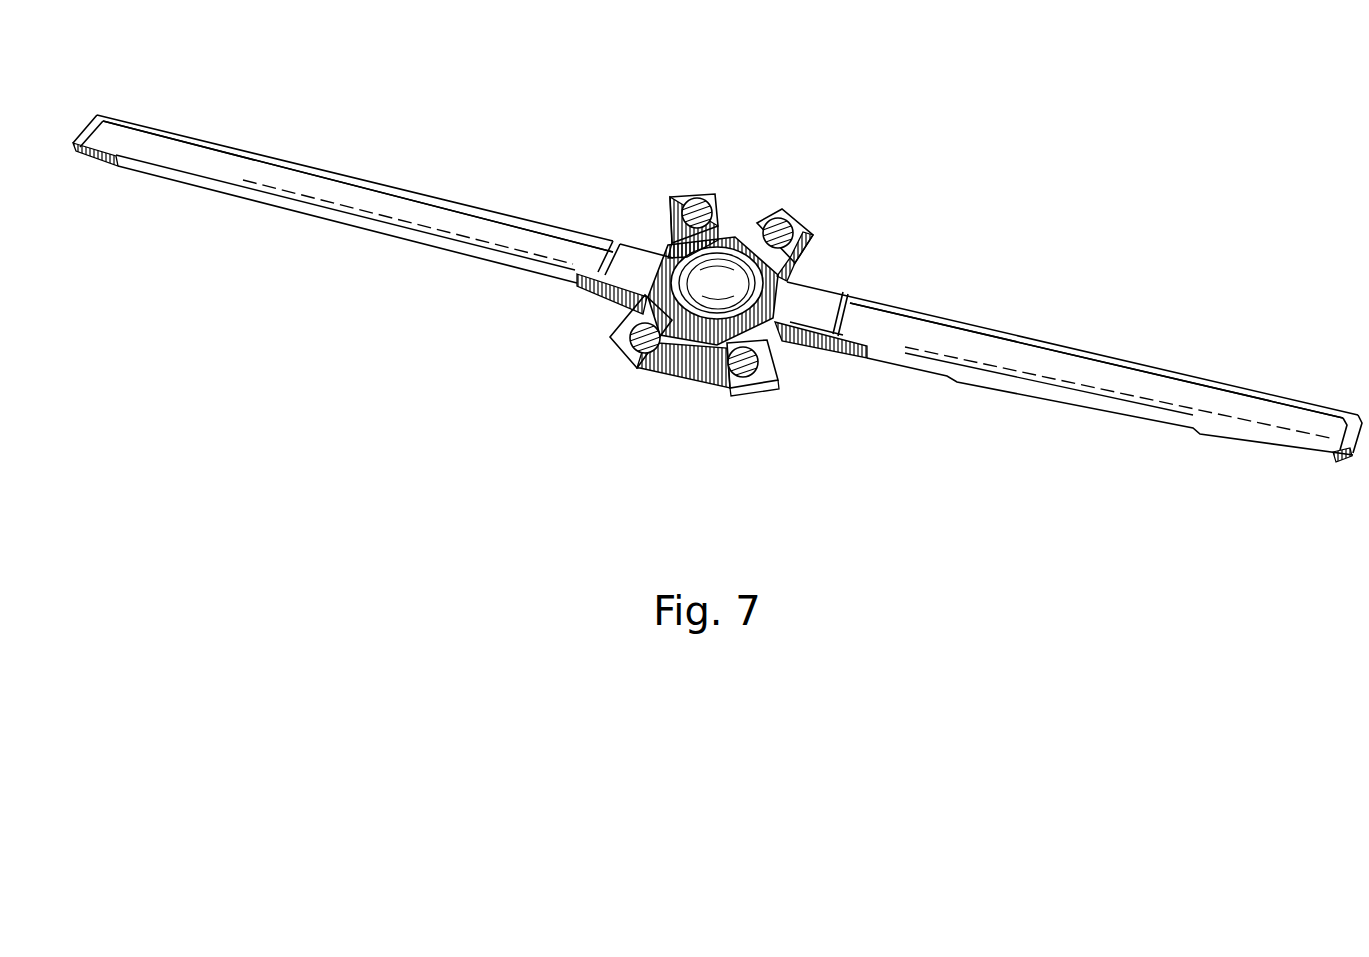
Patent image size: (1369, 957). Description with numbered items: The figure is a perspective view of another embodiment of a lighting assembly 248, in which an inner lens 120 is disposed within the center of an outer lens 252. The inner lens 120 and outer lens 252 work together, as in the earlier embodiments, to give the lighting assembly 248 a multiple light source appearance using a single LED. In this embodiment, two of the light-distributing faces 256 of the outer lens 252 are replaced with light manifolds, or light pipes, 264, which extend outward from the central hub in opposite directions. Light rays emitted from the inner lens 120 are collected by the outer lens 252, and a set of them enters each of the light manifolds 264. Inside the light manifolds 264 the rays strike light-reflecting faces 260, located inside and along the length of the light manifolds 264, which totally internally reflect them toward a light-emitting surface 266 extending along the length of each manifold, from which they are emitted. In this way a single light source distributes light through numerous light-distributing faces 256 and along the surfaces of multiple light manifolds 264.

The lighting assembly 248 is at (809, 263).
The inner lens 120 is at (737, 267).
The outer lens 252 is at (808, 302).
The light-distributing faces 256 is at (703, 200).
The light-reflecting faces 260 is at (90, 155).
The light manifolds 264 is at (691, 245).
The light-emitting surface 266 is at (270, 172).